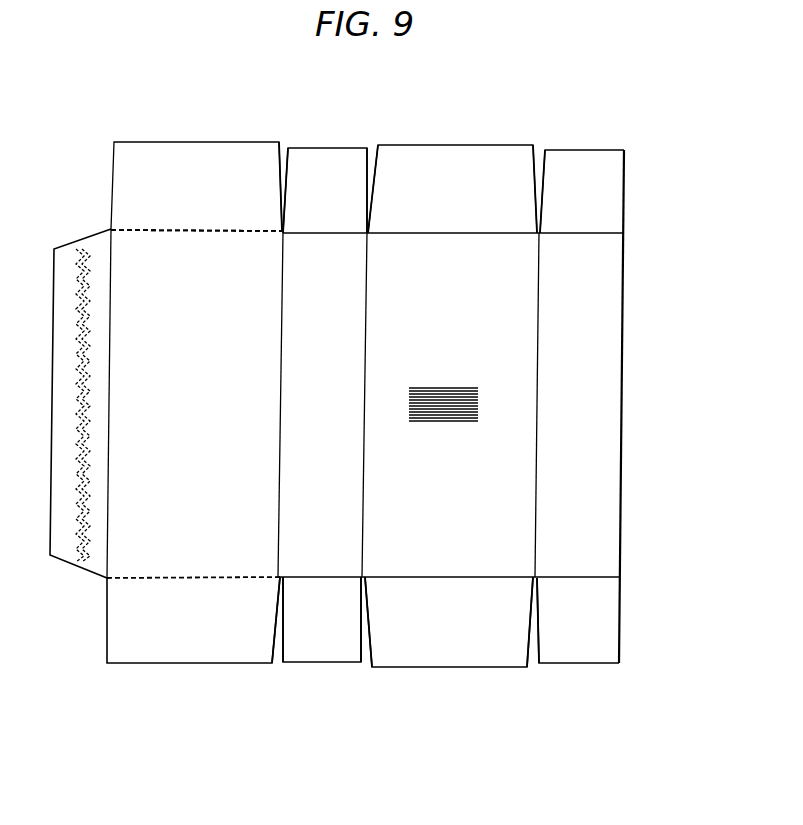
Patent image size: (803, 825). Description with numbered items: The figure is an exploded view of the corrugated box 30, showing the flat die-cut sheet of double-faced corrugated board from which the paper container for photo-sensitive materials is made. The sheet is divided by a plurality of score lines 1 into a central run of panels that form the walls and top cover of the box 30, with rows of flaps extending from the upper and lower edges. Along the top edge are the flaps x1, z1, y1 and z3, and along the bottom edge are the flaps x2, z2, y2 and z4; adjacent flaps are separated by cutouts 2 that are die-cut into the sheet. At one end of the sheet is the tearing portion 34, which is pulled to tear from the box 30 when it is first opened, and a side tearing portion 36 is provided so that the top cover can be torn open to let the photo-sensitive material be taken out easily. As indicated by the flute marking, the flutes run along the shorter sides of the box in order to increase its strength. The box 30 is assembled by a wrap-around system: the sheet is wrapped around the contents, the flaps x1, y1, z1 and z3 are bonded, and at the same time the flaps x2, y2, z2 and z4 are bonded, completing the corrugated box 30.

The score line 1 is at (312, 235).
The cutout 2 is at (286, 132).
The corrugated box 30 is at (619, 265).
The tearing portion 34 is at (75, 567).
The side tearing portion 36 is at (227, 228).
The flap x1 is at (188, 155).
The flap z1 is at (332, 147).
The flap y1 is at (442, 155).
The flap z3 is at (602, 158).
The flap x2 is at (180, 653).
The flap z2 is at (338, 655).
The flap y2 is at (436, 657).
The flap z4 is at (593, 660).